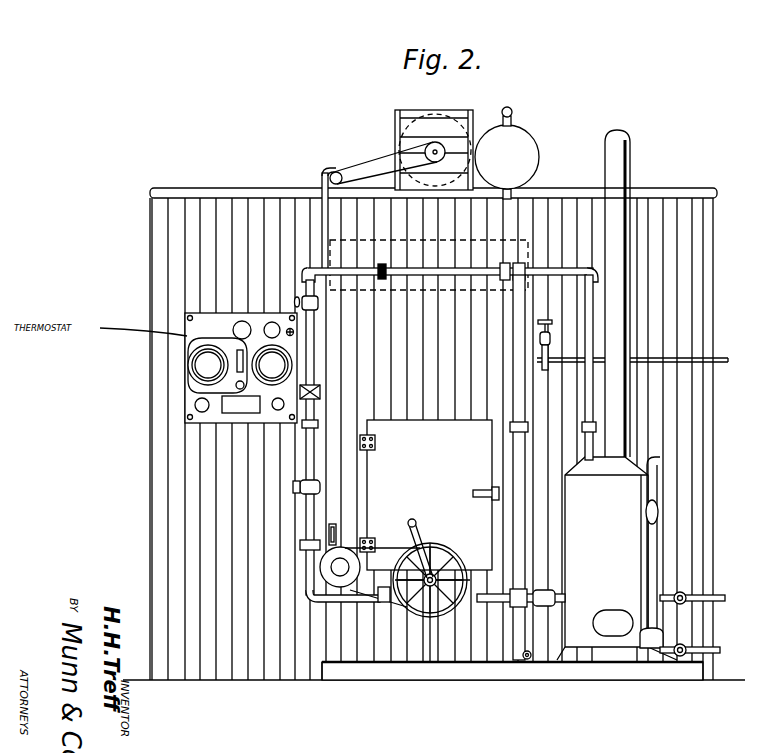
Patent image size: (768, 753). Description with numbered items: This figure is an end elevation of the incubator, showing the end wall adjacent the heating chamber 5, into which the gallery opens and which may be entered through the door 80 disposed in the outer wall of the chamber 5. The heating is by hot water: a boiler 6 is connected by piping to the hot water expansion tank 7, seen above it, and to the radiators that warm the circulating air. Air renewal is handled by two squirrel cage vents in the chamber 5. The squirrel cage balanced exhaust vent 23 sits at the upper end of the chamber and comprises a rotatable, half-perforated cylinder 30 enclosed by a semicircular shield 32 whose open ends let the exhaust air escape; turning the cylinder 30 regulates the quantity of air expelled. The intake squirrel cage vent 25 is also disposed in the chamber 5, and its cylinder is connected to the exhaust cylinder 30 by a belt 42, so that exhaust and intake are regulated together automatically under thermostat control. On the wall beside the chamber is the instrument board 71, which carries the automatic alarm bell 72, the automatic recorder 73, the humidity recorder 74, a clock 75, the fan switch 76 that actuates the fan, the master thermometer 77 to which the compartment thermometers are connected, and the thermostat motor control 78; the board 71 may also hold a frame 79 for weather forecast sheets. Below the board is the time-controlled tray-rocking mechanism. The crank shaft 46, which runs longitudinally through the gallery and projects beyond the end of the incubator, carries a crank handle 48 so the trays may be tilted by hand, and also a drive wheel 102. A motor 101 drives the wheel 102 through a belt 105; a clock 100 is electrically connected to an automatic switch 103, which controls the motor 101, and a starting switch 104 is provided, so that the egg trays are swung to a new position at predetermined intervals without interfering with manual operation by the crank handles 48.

The heating chamber 5 is at (397, 652).
The boiler 6 is at (633, 556).
The hot water expansion tank 7 is at (523, 165).
The squirrel cage balanced exhaust vent 23 is at (418, 112).
The intake squirrel cage vent 25 is at (321, 203).
The cylinder 30 is at (458, 112).
The semicircular shield 32 is at (396, 124).
The belt 42 is at (372, 163).
The crank shaft 46 is at (431, 600).
The crank handles 48 is at (403, 602).
The instrument board 71 is at (190, 325).
The automatic alarm bell 72 is at (247, 322).
The automatic recorder 73 is at (192, 360).
The humidity recorder 74 is at (274, 350).
The clock 75 is at (237, 383).
The fan switch 76 is at (279, 411).
The master thermometer 77 is at (195, 405).
The thermostat motor control 78 is at (260, 413).
The frame 79 is at (190, 412).
The door 80 is at (472, 600).
The clock 100 is at (268, 323).
The motor 101 is at (328, 568).
The drive wheel 102 is at (445, 560).
The automatic switch 103 is at (328, 525).
The starting switch 104 is at (295, 331).
The belt 105 is at (388, 550).